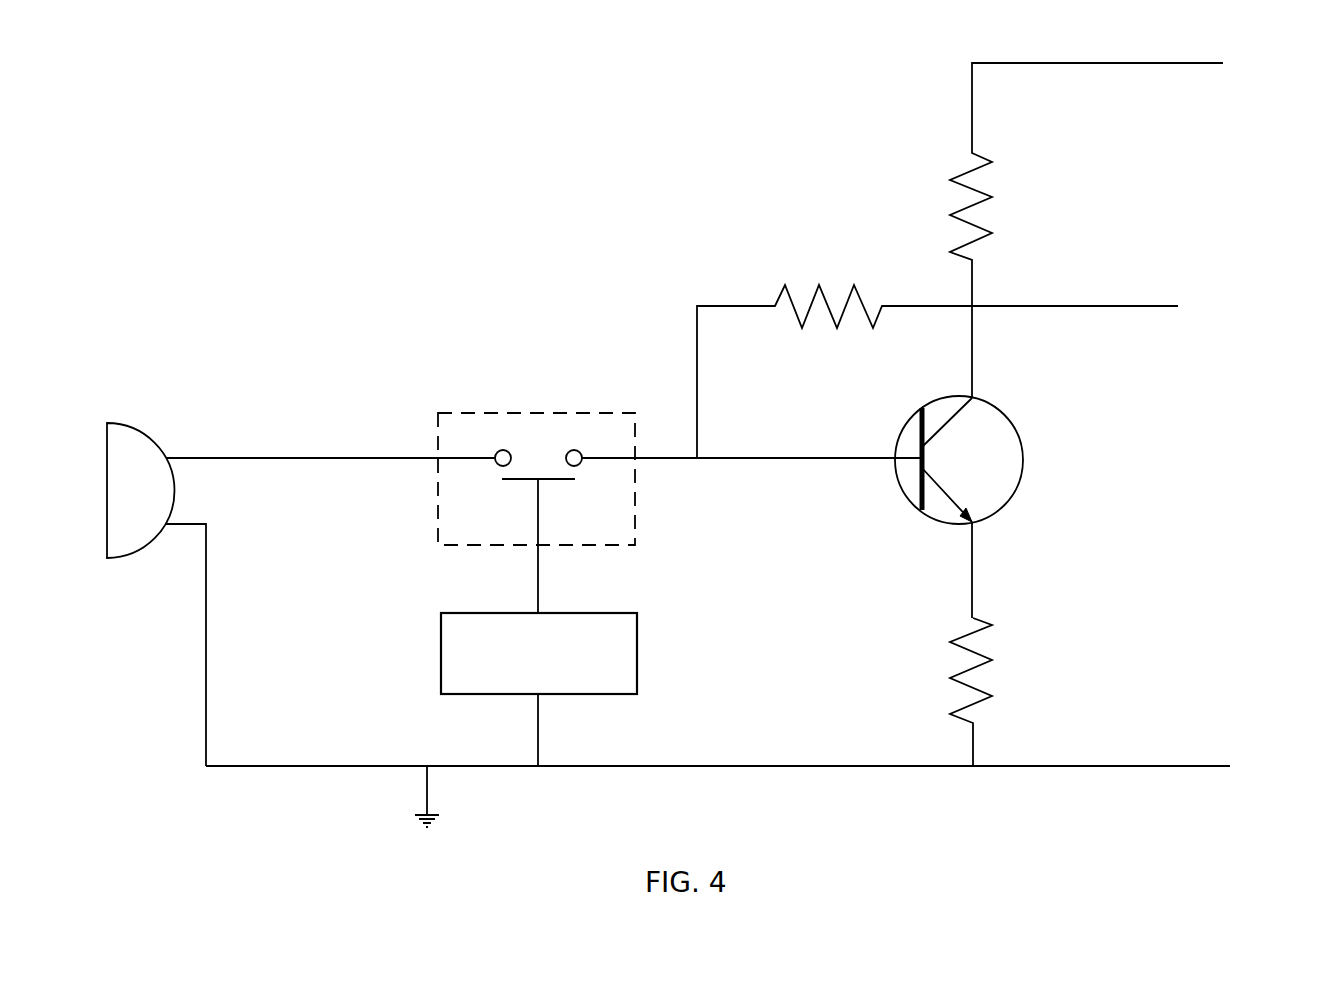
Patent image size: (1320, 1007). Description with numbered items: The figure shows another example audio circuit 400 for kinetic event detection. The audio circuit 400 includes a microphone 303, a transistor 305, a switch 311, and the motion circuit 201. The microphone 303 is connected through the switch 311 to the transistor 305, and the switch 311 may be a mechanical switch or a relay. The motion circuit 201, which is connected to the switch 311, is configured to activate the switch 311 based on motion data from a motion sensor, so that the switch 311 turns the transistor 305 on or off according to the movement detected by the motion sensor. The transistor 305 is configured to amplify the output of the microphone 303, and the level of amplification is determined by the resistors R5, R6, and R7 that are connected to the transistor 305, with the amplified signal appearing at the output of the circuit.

The audio circuit 400 is at (357, 191).
The microphone 303 is at (129, 425).
The switch 311 is at (512, 413).
The motion circuit 201 is at (488, 613).
The resistor R5 is at (785, 285).
The resistor R6 is at (962, 172).
The resistor R7 is at (955, 635).
The transistor 305 is at (905, 430).